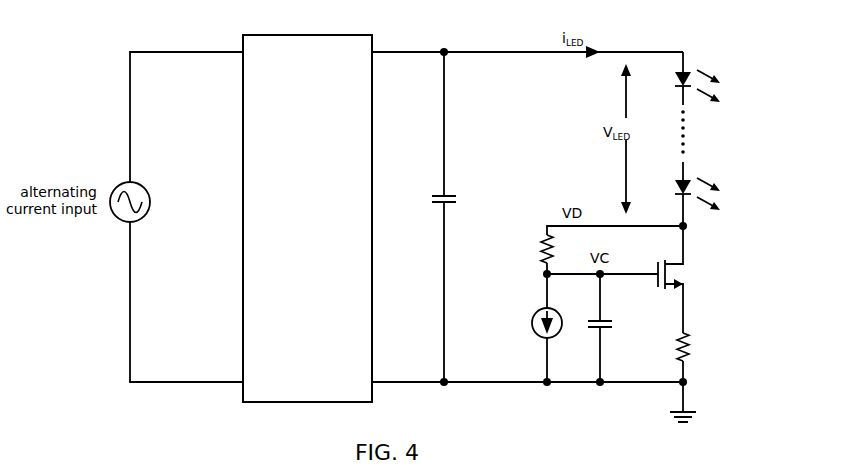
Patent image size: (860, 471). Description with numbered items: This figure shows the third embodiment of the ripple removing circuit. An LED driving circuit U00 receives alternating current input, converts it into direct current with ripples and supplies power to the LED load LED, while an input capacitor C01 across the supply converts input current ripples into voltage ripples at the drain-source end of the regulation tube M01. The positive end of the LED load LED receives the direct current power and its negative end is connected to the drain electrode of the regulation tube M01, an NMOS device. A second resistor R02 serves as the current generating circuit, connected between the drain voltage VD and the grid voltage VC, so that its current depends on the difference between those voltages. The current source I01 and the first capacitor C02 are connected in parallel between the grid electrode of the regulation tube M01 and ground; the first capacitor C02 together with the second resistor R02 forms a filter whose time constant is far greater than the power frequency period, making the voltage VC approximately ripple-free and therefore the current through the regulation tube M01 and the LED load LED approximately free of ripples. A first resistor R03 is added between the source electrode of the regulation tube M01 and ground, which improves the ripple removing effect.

The LED driving circuit U00 is at (307, 209).
The input capacitor C01 is at (463, 217).
The LED load LED is at (712, 139).
The second resistor R02 is at (528, 254).
The current source I01 is at (531, 328).
The first capacitor C02 is at (618, 328).
The regulation tube M01 is at (695, 279).
The first resistor R03 is at (703, 357).